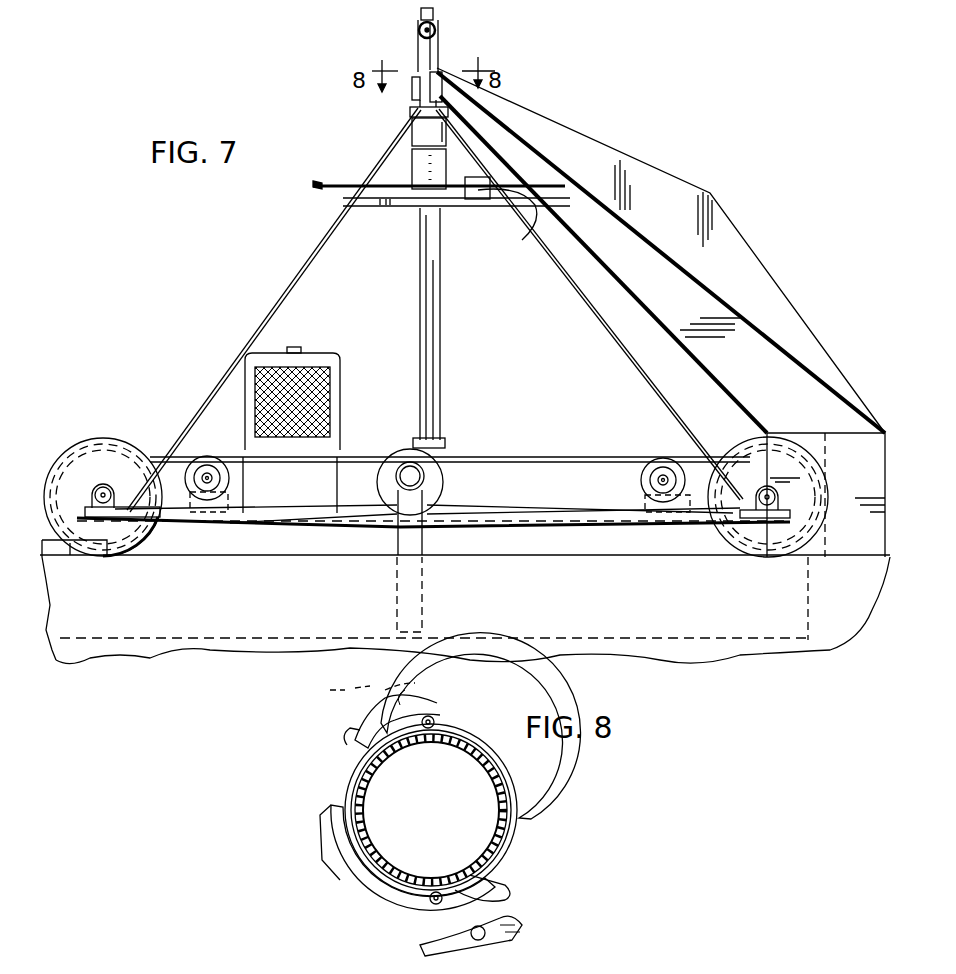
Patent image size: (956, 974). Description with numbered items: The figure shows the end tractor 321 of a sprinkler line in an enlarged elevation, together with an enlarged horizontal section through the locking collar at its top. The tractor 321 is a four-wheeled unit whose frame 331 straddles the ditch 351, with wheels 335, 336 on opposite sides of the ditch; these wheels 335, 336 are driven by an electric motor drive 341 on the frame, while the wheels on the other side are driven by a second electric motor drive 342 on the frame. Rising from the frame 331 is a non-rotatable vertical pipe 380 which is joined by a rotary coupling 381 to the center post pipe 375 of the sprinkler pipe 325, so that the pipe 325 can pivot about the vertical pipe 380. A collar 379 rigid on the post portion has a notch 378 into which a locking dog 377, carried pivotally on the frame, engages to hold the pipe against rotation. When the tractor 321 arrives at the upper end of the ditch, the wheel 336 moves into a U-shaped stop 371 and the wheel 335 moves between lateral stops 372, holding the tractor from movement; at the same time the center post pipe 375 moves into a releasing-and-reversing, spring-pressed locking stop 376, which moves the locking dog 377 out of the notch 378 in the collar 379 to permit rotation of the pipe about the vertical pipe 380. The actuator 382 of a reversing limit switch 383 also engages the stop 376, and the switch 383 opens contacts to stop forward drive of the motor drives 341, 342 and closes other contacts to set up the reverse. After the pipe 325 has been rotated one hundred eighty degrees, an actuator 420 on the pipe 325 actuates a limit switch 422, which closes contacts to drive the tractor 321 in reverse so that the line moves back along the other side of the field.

In FIG. 7, the tractor 321 is at (316, 170).
In FIG. 7, the pipe 325 is at (418, 27).
In FIG. 7, the frame 331 is at (626, 370).
In FIG. 7, the wheel 335 is at (92, 452).
In FIG. 7, the wheel 336 is at (748, 448).
In FIG. 7, the electric motor drive 341 is at (660, 458).
In FIG. 7, the electric motor drive 342 is at (210, 460).
In FIG. 7, the ditch 351 is at (808, 622).
In FIG. 7, the U-shaped stop 371 is at (843, 470).
In FIG. 7, the lateral stop 372 is at (93, 558).
In FIG. 7, the center post pipe 375 is at (420, 60).
In FIG. 8, the center post pipe 375 is at (472, 766).
In FIG. 7, the locking stop 376 is at (436, 72).
In FIG. 8, the locking stop 376 is at (510, 932).
In FIG. 8, the locking dog 377 is at (358, 888).
In FIG. 8, the notch 378 is at (434, 726).
In FIG. 7, the collar 379 is at (415, 86).
In FIG. 8, the collar 379 is at (362, 770).
In FIG. 7, the non-rotatable vertical pipe 380 is at (420, 234).
In FIG. 7, the rotary coupling 381 is at (418, 175).
In FIG. 7, the actuator 382 is at (507, 228).
In FIG. 7, the reversing limit switch 383 is at (477, 199).
In FIG. 7, the actuator 420 is at (412, 111).
In FIG. 7, the limit switch 422 is at (453, 110).